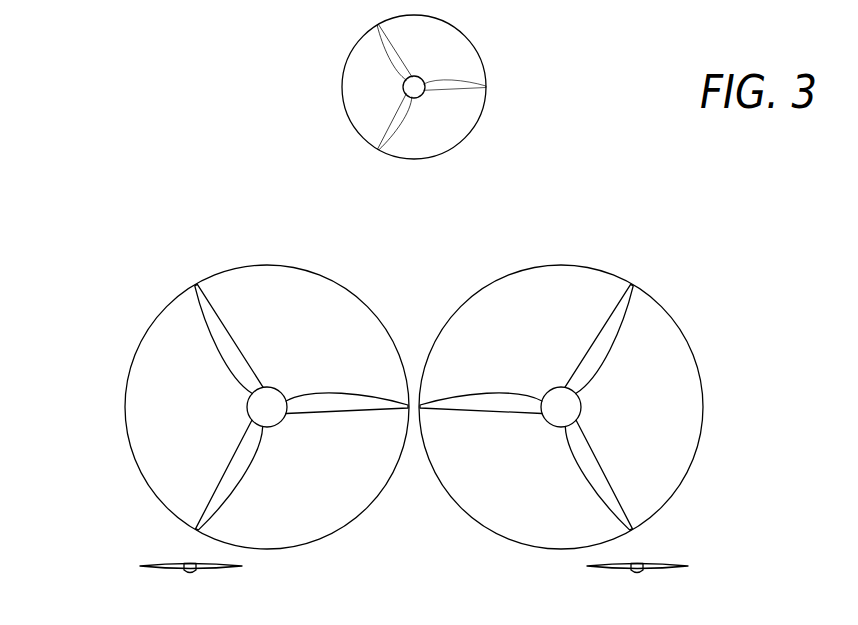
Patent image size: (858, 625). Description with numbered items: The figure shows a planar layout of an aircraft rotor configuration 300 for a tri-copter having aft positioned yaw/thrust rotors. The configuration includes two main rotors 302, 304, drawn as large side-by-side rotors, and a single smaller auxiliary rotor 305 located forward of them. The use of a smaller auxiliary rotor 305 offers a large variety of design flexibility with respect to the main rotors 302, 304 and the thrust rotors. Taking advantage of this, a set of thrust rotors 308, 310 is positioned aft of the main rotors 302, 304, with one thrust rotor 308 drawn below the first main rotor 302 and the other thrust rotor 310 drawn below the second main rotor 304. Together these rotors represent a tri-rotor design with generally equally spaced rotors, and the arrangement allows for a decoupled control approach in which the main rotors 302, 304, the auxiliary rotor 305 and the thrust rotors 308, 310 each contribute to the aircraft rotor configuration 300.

The aircraft rotor configuration 300 is at (203, 223).
The main rotor 302 is at (205, 322).
The main rotor 304 is at (613, 338).
The auxiliary rotor 305 is at (397, 65).
The thrust rotor 308 is at (168, 564).
The thrust rotor 310 is at (658, 562).